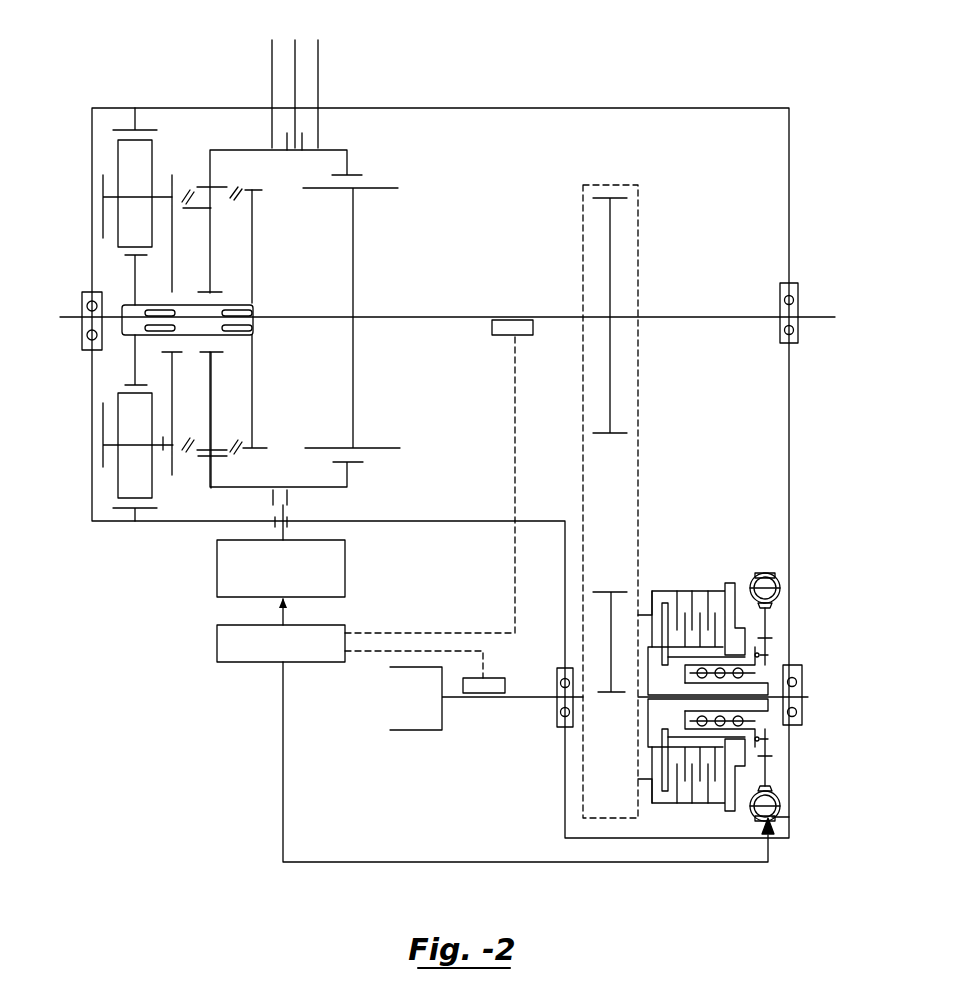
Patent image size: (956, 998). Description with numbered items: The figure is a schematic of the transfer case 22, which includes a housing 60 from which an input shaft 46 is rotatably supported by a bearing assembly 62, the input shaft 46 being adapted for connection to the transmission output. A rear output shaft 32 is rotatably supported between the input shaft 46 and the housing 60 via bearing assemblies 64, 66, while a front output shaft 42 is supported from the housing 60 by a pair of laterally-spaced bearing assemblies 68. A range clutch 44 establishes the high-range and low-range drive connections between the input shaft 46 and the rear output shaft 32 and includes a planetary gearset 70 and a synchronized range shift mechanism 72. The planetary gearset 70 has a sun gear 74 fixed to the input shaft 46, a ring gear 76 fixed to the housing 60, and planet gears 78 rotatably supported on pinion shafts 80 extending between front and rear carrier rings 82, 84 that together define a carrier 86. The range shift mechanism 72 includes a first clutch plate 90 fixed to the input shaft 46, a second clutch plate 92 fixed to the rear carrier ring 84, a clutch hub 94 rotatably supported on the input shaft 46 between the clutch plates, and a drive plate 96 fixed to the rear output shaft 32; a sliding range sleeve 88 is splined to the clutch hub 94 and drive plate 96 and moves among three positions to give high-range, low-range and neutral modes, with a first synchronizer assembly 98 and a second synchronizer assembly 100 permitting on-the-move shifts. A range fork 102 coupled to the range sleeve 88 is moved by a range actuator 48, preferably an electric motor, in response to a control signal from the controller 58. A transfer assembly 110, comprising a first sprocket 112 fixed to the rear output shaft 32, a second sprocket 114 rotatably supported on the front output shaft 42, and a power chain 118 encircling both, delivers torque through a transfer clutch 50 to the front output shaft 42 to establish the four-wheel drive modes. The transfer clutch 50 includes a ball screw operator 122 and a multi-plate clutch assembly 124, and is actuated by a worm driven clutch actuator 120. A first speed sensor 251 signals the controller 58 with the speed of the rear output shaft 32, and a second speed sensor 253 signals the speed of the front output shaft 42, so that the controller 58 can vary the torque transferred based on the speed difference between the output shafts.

The transfer case 22 is at (390, 47).
The rear output shaft 32 is at (700, 316).
The front output shaft 42 is at (513, 700).
The range clutch 44 is at (177, 126).
The input shaft 46 is at (70, 316).
The range actuator 48 is at (217, 586).
The transfer clutch 50 is at (720, 563).
The controller 58 is at (217, 629).
The housing 60 is at (596, 108).
The bearing assembly 62 is at (88, 352).
The bearing assembly 64 is at (255, 308).
The bearing assembly 66 is at (781, 296).
The bearing assemblies 68 is at (560, 730).
The planetary gearset 70 is at (110, 492).
The synchronized range shift mechanism 72 is at (265, 221).
The sun gear 74 is at (135, 290).
The ring gear 76 is at (135, 128).
The planet gears 78 is at (125, 155).
The pinion shafts 80 is at (163, 452).
The front carrier ring 82 is at (103, 207).
The rear carrier ring 84 is at (172, 246).
The carrier 86 is at (98, 455).
The range sleeve 88 is at (253, 148).
The first clutch plate 90 is at (253, 386).
The second clutch plate 92 is at (172, 185).
The clutch hub 94 is at (211, 246).
The drive plate 96 is at (355, 372).
The first synchronizer assembly 98 is at (243, 438).
The second synchronizer assembly 100 is at (188, 433).
The range fork 102 is at (286, 509).
The transfer assembly 110 is at (720, 440).
The first sprocket 112 is at (610, 245).
The second sprocket 114 is at (603, 784).
The power chain 118 is at (640, 481).
The clutch actuator 120 is at (778, 626).
The ball screw operator 122 is at (765, 684).
The multi-plate clutch assembly 124 is at (685, 596).
The first speed sensor 251 is at (502, 336).
The second speed sensor 253 is at (493, 678).